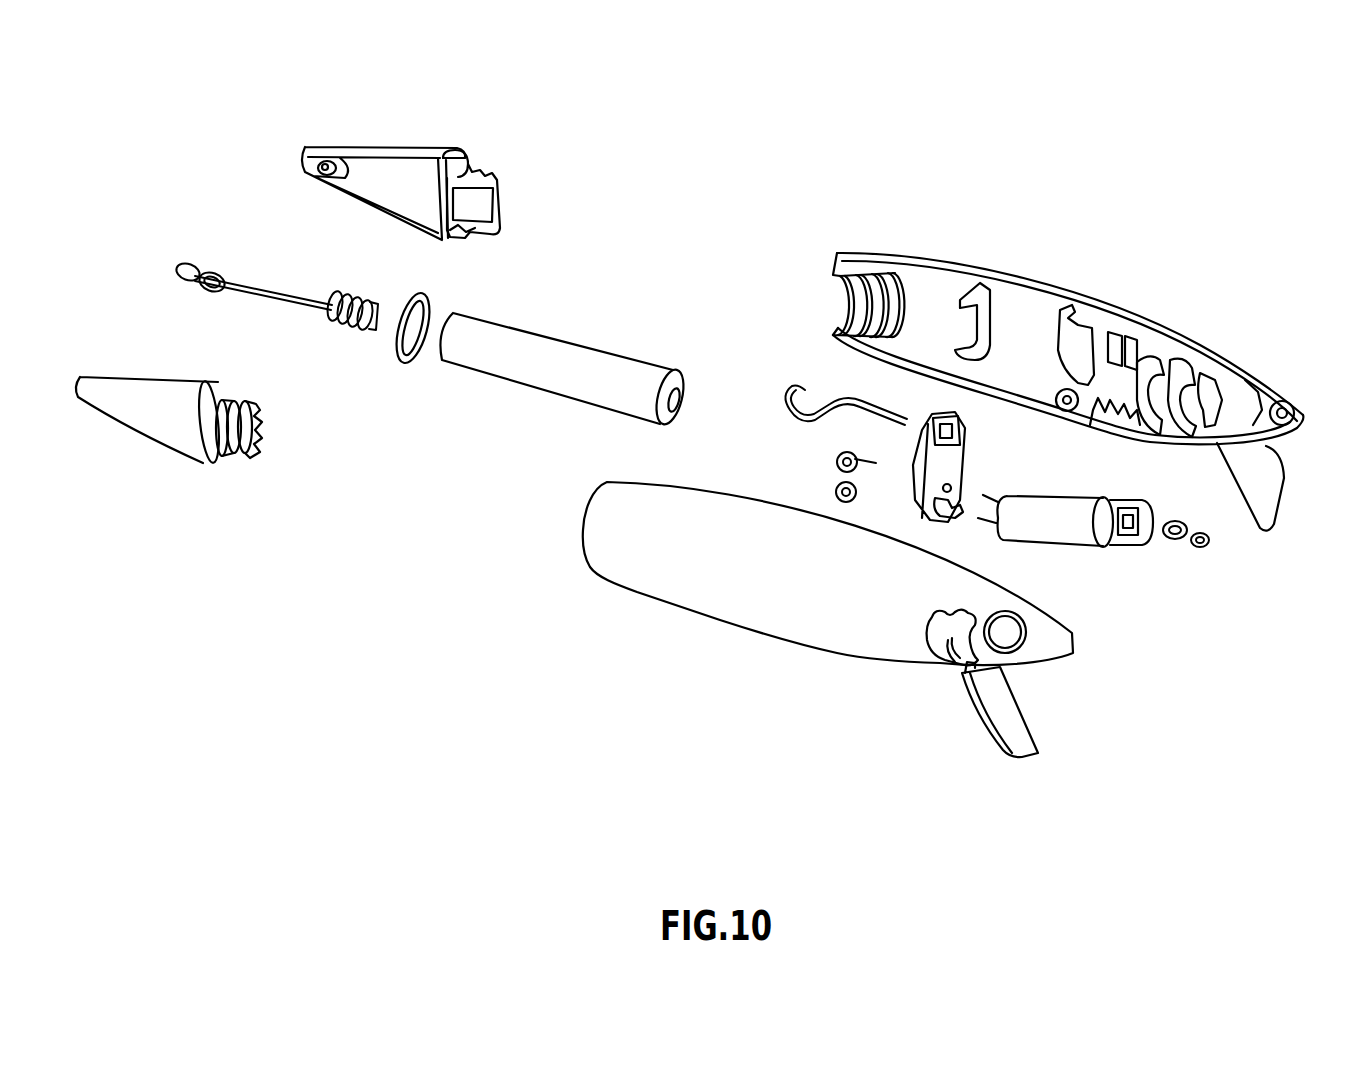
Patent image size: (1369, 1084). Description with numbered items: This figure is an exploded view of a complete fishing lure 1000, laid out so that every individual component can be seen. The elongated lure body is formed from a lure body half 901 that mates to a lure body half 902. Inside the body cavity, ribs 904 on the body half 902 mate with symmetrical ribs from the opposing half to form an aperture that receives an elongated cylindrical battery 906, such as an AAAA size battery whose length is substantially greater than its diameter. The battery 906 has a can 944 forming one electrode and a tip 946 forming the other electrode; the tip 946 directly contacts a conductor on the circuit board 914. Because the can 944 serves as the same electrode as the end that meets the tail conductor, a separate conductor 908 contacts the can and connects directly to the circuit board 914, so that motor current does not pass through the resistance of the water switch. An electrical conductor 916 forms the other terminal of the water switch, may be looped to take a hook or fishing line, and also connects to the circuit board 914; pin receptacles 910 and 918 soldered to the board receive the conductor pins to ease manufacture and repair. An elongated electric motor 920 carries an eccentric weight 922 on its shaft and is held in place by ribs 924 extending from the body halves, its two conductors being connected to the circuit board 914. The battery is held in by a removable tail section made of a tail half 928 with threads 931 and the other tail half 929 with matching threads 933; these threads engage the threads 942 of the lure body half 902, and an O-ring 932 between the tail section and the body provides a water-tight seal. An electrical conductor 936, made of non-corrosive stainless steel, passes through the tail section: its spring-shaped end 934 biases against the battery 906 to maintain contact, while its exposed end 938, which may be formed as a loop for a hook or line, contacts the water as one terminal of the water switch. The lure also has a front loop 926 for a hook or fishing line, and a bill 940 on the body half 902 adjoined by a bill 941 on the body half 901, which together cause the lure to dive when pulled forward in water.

The lure body half 901 is at (828, 653).
The lure body half 902 is at (1075, 344).
The ribs 904 is at (980, 287).
The battery 906 is at (600, 382).
The conductor 908 is at (793, 383).
The pin receptacle 910 is at (960, 433).
The circuit board 914 is at (987, 497).
The electrical conductor 916 is at (838, 480).
The pin receptacle 918 is at (958, 515).
The electric motor 920 is at (1081, 534).
The eccentric weight 922 is at (1140, 543).
The ribs 924 is at (1158, 377).
The front loop 926 is at (1202, 542).
The tail section 928 is at (380, 146).
The tail section half 929 is at (157, 425).
The threads 931 is at (487, 172).
The O-ring 932 is at (405, 363).
The threads 933 is at (235, 455).
The spring-shaped end 934 is at (340, 332).
The electrical conductor 936 is at (272, 292).
The exposed end 938 is at (177, 279).
The bill 940 is at (1268, 488).
The bill 941 is at (1018, 747).
The threads 942 is at (850, 303).
The can 944 is at (575, 382).
The tip 946 is at (688, 412).
The lure 1000 is at (388, 813).